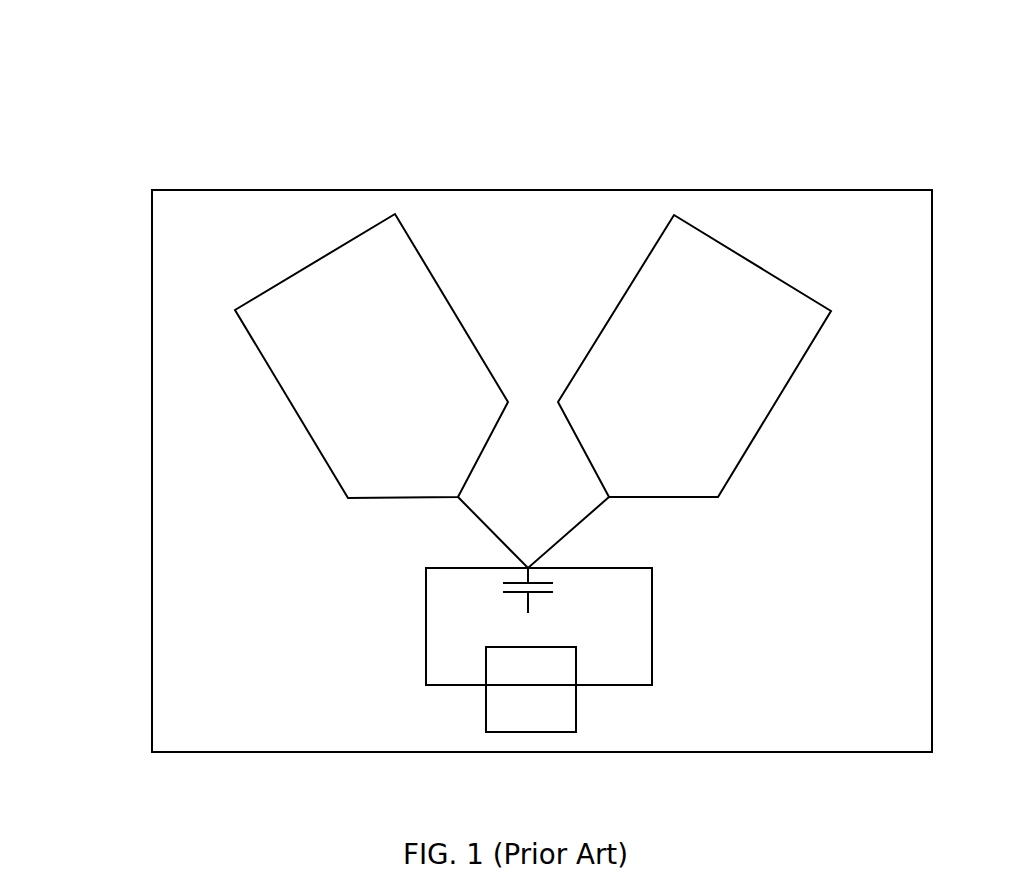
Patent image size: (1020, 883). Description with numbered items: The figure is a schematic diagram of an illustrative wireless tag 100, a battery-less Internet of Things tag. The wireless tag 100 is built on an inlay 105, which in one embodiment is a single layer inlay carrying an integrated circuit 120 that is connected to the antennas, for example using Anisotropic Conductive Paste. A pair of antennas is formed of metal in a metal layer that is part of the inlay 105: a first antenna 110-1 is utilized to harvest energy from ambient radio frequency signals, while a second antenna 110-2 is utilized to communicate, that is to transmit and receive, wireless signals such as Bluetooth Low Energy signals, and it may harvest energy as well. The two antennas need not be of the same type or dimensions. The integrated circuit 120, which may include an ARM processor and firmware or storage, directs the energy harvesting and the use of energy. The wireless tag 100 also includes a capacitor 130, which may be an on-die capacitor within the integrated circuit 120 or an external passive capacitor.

The wireless tag 100 is at (189, 70).
The inlay 105 is at (170, 262).
The first antenna 110-1 is at (430, 297).
The second antenna 110-2 is at (735, 265).
The integrated circuit 120 is at (485, 698).
The capacitor 130 is at (497, 588).